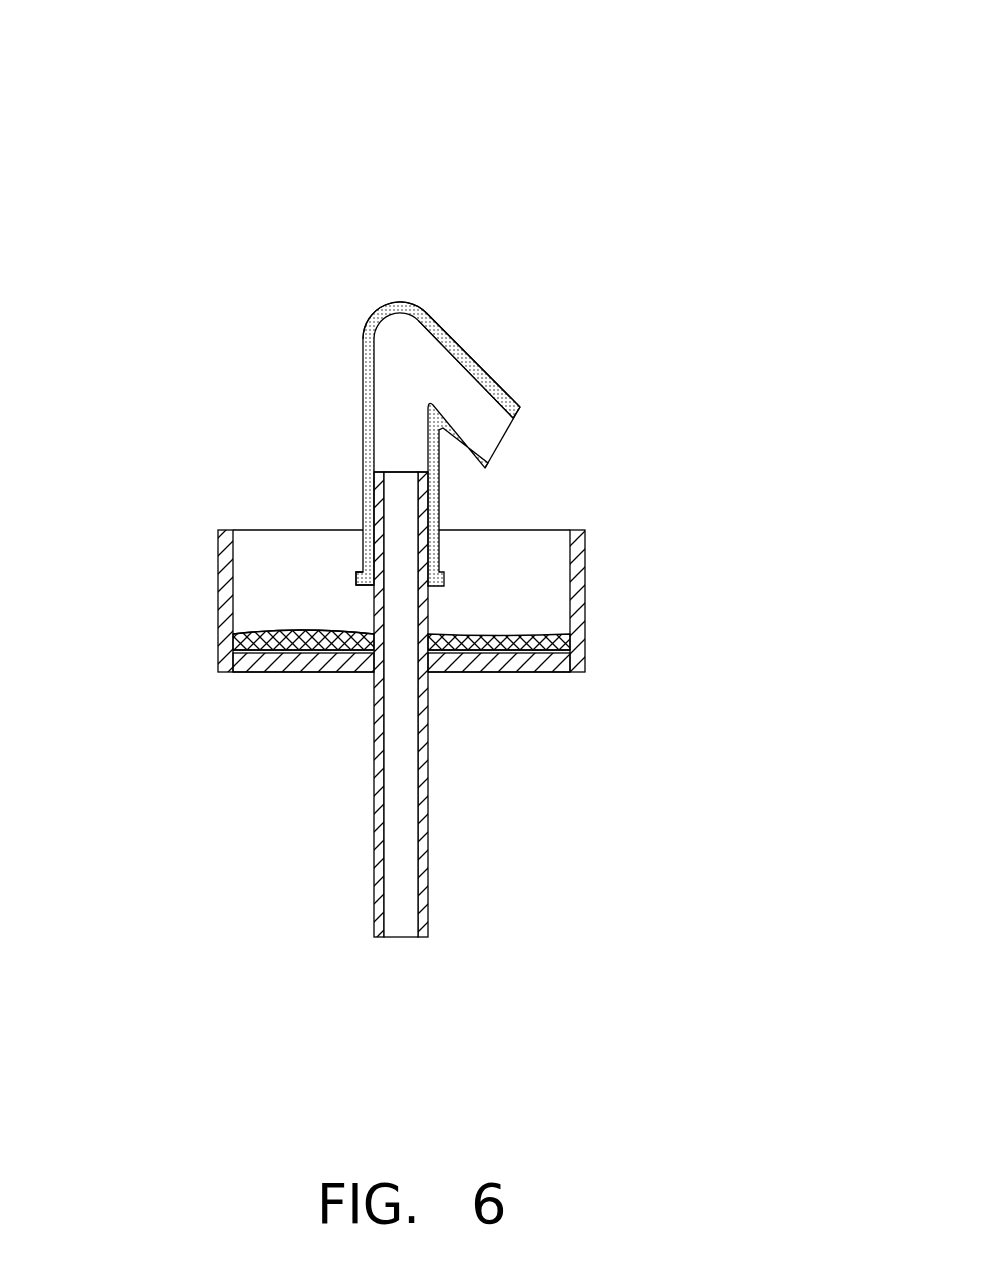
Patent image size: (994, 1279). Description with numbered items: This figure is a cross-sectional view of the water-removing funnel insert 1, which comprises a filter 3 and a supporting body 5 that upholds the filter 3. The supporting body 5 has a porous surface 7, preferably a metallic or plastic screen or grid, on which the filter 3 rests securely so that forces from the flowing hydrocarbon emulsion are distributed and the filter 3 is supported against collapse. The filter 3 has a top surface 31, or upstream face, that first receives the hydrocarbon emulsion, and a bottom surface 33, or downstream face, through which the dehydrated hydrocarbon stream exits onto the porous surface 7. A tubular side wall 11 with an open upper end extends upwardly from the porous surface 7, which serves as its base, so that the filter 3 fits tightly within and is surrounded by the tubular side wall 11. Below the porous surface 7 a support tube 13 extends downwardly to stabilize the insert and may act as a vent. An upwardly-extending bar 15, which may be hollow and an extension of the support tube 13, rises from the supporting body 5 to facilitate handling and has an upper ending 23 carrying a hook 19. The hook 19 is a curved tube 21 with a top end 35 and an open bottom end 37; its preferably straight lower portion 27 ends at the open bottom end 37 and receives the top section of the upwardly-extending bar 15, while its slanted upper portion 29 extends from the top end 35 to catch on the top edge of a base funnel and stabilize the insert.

The water-removing funnel insert 1 is at (743, 200).
The filter 3 is at (497, 637).
The supporting body 5 is at (585, 672).
The porous surface 7 is at (507, 673).
The tubular side wall 11 is at (570, 654).
The support tube 13 is at (370, 873).
The upwardly-extending bar 15 is at (366, 500).
The hook 19 is at (462, 348).
The curved tube 21 is at (412, 306).
The upper ending 23 is at (398, 472).
The lower portion 27 is at (440, 492).
The slanted upper portion 29 is at (487, 382).
The top surface 31 is at (310, 633).
The bottom surface 33 is at (303, 650).
The top end 35 is at (506, 434).
The open bottom end 37 is at (357, 578).